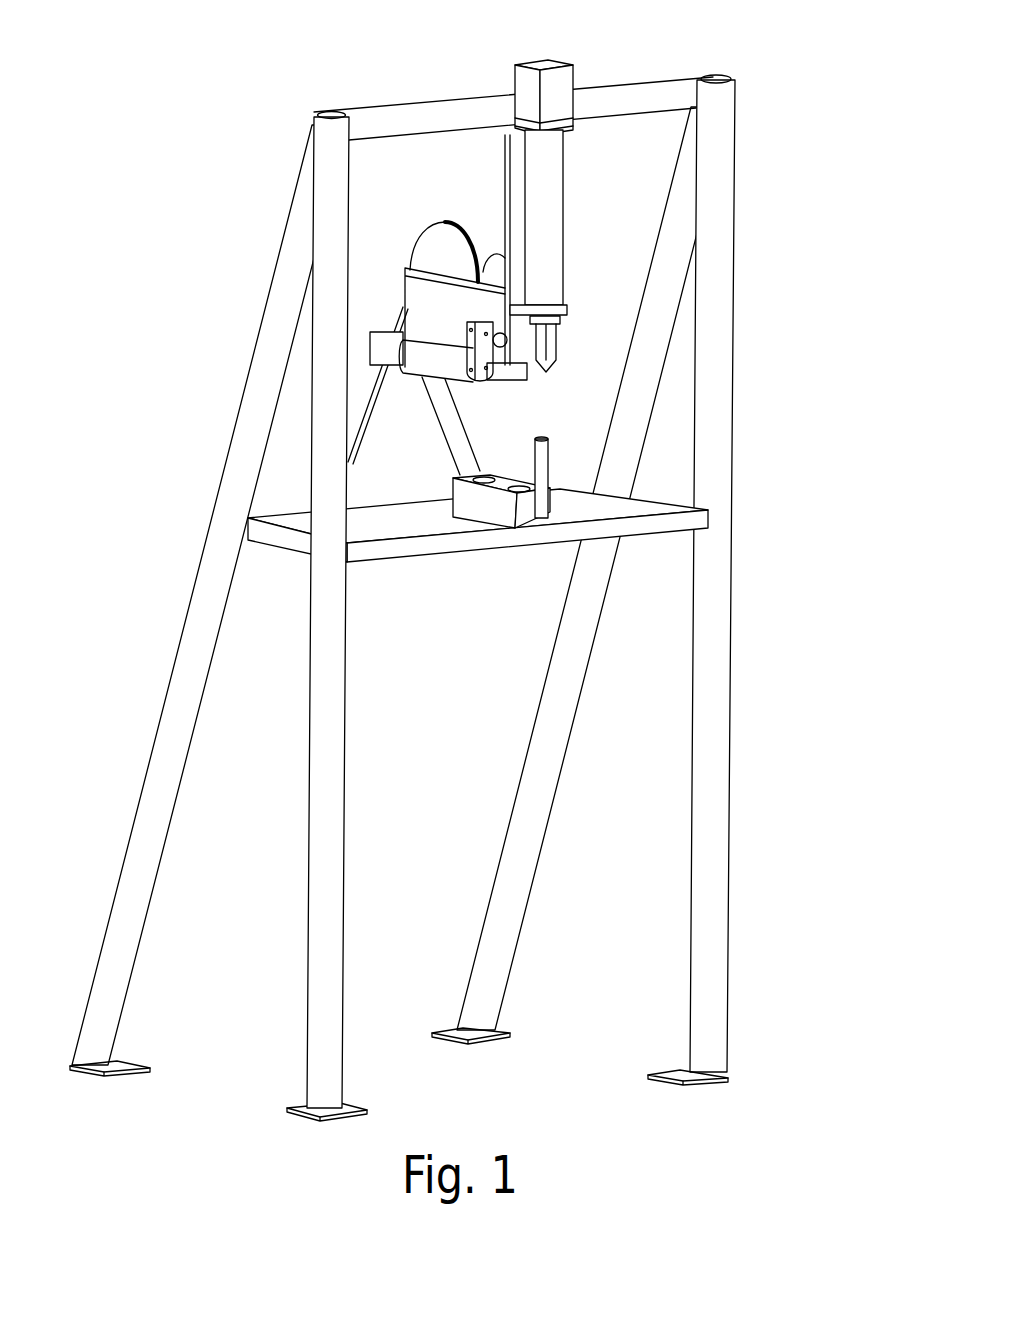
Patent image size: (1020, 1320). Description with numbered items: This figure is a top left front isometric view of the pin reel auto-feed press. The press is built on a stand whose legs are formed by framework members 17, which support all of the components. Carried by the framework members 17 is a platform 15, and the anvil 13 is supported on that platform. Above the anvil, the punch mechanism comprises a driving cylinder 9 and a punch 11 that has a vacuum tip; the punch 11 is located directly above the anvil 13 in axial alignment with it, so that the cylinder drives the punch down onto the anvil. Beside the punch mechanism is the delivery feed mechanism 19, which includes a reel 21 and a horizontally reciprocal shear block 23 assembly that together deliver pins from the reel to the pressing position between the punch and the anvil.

The driving cylinder 9 is at (547, 198).
The punch 11 is at (543, 345).
The anvil 13 is at (540, 450).
The platform 15 is at (412, 522).
The framework members 17 is at (712, 886).
The delivery feed mechanism 19 is at (430, 302).
The reel 21 is at (444, 252).
The shear block 23 is at (443, 360).